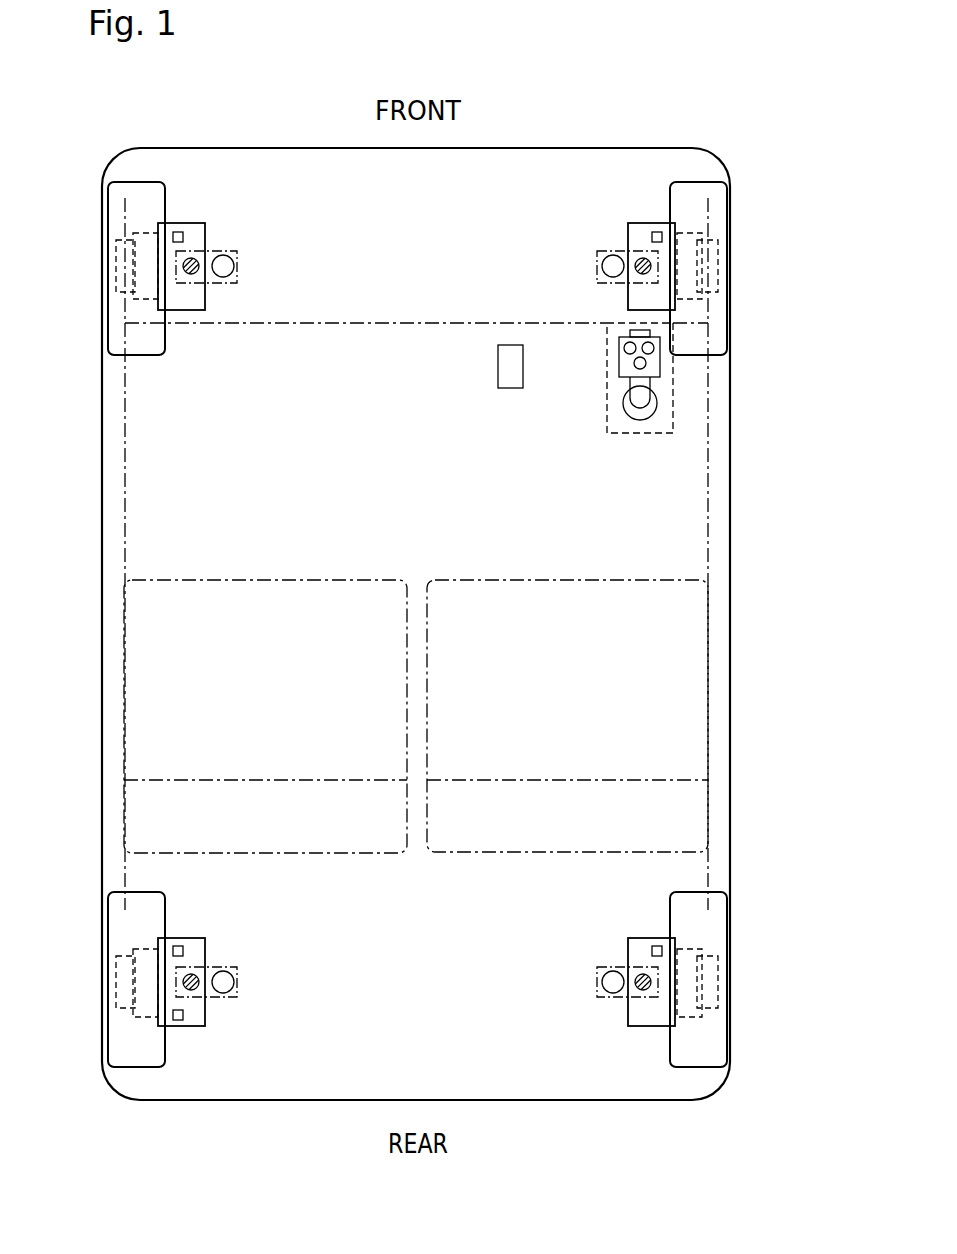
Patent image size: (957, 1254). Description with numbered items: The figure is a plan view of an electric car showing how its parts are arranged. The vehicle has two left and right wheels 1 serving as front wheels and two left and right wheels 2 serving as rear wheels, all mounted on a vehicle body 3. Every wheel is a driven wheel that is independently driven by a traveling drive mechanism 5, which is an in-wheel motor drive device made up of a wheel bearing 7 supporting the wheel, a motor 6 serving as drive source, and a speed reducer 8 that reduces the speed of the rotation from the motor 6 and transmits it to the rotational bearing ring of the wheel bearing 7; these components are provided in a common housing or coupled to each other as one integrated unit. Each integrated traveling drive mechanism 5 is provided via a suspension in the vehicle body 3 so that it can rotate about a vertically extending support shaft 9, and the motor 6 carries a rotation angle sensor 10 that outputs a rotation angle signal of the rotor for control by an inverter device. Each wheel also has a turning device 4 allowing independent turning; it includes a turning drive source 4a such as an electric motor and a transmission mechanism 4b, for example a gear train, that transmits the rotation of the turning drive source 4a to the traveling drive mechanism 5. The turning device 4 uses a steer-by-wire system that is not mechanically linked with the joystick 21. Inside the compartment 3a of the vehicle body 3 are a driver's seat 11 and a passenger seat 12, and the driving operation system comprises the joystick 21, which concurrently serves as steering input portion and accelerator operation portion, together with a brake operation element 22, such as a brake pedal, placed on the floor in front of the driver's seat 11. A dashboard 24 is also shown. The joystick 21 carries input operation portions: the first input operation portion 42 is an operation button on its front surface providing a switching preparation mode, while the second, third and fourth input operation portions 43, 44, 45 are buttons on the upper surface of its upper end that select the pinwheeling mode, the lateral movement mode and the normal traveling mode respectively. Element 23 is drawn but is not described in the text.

The wheel 1 is at (112, 230).
The wheel 2 is at (112, 1020).
The vehicle body 3 is at (90, 418).
The compartment 3a is at (178, 466).
The turning device 4 is at (238, 264).
The turning drive source 4a is at (222, 265).
The transmission mechanism 4b is at (213, 255).
The traveling drive mechanism 5 is at (192, 108).
The motor 6 is at (185, 223).
The wheel bearing 7 is at (119, 247).
The speed reducer 8 is at (145, 233).
The support shaft 9 is at (192, 259).
The rotation angle sensor 10 is at (168, 238).
The driver's seat 11 is at (653, 578).
The passenger seat 12 is at (178, 578).
The joystick 21 is at (643, 404).
The brake operation element 22 is at (507, 388).
The caster housing 23 is at (675, 378).
The dashboard 24 is at (352, 308).
The first input operation portion 42 is at (630, 333).
The second input operation portion 43 is at (654, 350).
The third input operation portion 44 is at (627, 352).
The fourth input operation portion 45 is at (643, 366).